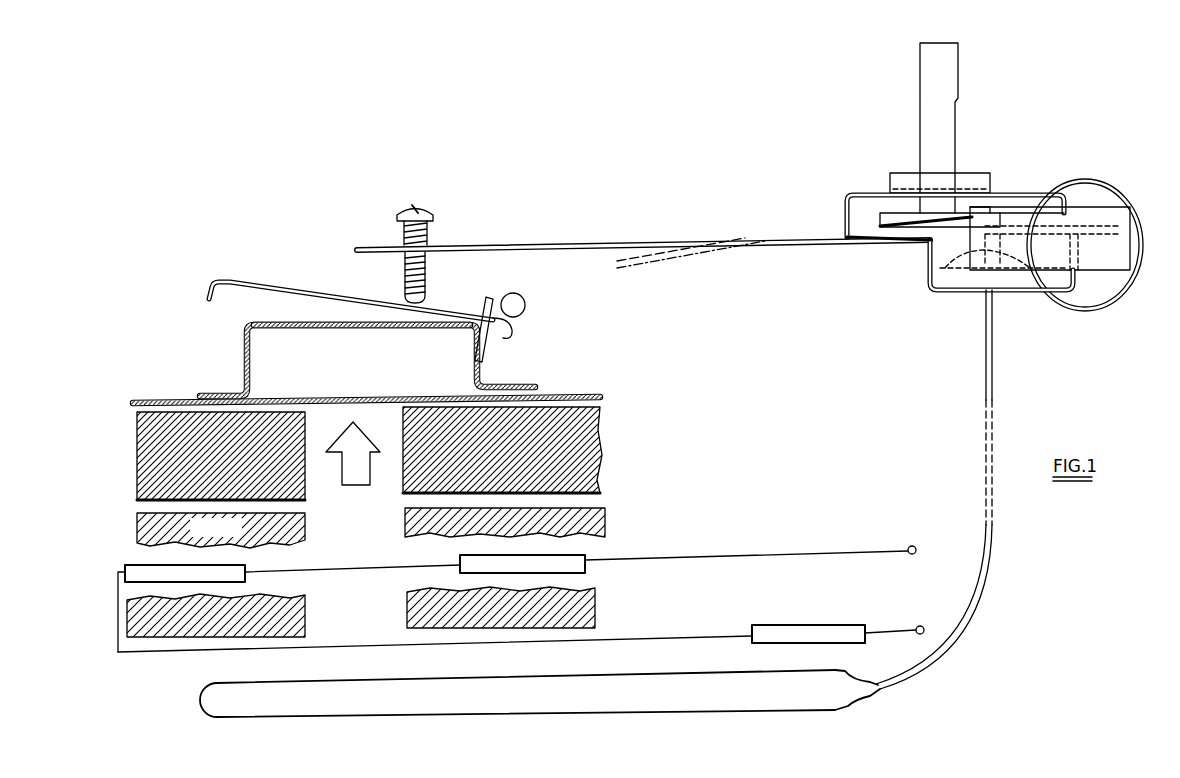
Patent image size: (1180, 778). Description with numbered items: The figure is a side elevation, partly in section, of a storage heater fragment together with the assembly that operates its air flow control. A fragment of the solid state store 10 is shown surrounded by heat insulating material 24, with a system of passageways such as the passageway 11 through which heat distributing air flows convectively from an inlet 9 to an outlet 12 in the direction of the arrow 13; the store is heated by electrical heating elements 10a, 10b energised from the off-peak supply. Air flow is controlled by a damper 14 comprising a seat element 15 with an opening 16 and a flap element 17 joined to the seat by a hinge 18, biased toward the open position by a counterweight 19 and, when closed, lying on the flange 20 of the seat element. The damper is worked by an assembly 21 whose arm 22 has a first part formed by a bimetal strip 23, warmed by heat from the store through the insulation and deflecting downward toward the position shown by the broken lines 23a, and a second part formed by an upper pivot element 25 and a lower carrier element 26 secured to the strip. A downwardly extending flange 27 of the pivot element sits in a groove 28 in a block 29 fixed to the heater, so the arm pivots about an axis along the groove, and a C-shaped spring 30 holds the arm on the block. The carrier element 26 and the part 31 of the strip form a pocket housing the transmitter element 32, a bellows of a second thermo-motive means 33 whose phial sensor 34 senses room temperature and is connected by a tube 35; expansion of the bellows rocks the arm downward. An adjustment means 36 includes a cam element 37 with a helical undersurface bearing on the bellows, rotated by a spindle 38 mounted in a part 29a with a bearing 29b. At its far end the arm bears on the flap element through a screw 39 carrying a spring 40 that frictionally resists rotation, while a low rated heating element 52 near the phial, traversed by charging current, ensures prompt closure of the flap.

The inlet 9 is at (358, 640).
The store 10 is at (371, 528).
The electrical heating element 10a is at (183, 575).
The electrical heating element 10b is at (545, 573).
The passageway 11 is at (287, 648).
The outlet 12 is at (386, 404).
The arrow 13 is at (356, 436).
The damper 14 is at (280, 250).
The seat element 15 is at (242, 368).
The opening 16 is at (358, 321).
The flap element 17 is at (302, 287).
The hinge 18 is at (486, 333).
The counterweight 19 is at (520, 298).
The flange 20 is at (285, 332).
The assembly 21 is at (1060, 132).
The arm 22 is at (848, 222).
The bimetal strip 23 is at (661, 238).
The broken lines 23a is at (665, 266).
The heat insulating material 24 is at (590, 428).
The upper pivot element 25 is at (852, 193).
The lower carrier element 26 is at (930, 280).
The downwardly extending flange 27 is at (1062, 192).
The groove 28 is at (1060, 212).
The block 29 is at (1114, 256).
The part 29a is at (972, 213).
The bearing 29b is at (917, 172).
The C-shaped spring 30 is at (1073, 312).
The part of the bimetal strip 31 is at (918, 244).
The transmitter element 32 is at (983, 292).
The second thermo-motive means 33 is at (957, 592).
The sensor 34 is at (720, 656).
The tube 35 is at (977, 604).
The adjustment means 36 is at (903, 123).
The cam element 37 is at (966, 212).
The spindle 38 is at (962, 100).
The screw 39 is at (408, 211).
The spring 40 is at (432, 231).
The heating element 52 is at (805, 625).